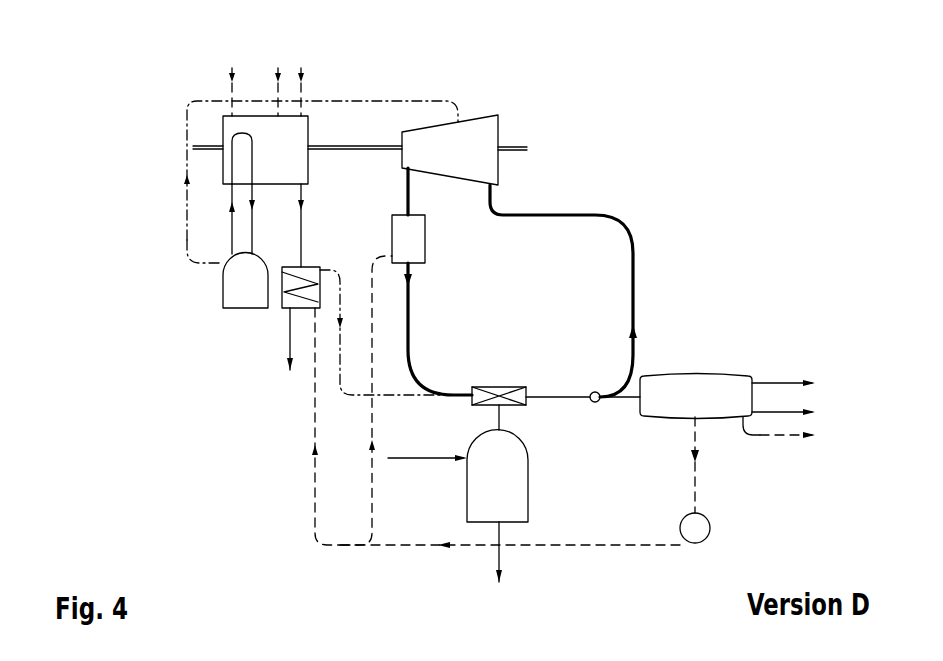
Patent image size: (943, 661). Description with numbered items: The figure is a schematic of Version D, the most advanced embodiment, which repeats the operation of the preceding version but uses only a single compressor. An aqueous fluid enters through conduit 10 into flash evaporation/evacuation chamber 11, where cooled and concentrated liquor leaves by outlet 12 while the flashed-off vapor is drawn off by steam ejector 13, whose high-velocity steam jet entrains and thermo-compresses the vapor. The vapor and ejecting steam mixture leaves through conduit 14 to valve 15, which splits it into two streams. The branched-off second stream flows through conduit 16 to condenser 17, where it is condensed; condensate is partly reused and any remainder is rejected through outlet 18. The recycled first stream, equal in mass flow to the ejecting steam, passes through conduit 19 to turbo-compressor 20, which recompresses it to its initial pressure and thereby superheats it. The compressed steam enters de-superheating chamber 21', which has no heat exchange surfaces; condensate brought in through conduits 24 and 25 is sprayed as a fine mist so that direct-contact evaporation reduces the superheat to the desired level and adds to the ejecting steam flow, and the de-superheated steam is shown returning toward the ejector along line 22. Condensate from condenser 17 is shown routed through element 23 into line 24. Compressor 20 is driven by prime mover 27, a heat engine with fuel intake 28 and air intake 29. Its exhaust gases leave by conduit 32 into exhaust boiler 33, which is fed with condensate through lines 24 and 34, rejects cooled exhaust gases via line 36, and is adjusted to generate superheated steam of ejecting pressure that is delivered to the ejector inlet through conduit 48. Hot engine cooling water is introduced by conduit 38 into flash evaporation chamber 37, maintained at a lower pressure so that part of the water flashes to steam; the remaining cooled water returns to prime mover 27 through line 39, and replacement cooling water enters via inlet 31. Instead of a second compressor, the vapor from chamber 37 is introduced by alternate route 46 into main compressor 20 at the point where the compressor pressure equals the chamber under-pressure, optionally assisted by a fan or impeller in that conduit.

The conduit 10 is at (427, 450).
The flash evaporation/evacuation chamber 11 is at (497, 476).
The outlet 12 is at (512, 553).
The steam ejector 13 is at (499, 397).
The conduit 14 is at (558, 385).
The valve 15 is at (595, 384).
The conduit 16 is at (620, 407).
The condenser 17 is at (696, 396).
The outlet 18 is at (779, 419).
The conduit 19 is at (563, 291).
The turbo-compressor 20 is at (450, 150).
The de-superheating chamber 21' is at (425, 215).
The line 22 is at (438, 329).
The pump 23 is at (708, 528).
The conduit 24 is at (531, 482).
The conduit 25 is at (369, 400).
The prime mover 27 is at (360, 150).
The fuel intake 28 is at (306, 84).
The air intake 29 is at (271, 84).
The line 31 is at (234, 84).
The conduit 32 is at (314, 225).
The exhaust boiler 33 is at (300, 277).
The line 34 is at (326, 426).
The line 36 is at (280, 339).
The flash evaporation chamber 37 is at (245, 281).
The conduit 38 is at (263, 219).
The line 39 is at (224, 219).
The alternate route 46 is at (311, 171).
The conduit 48 is at (396, 332).